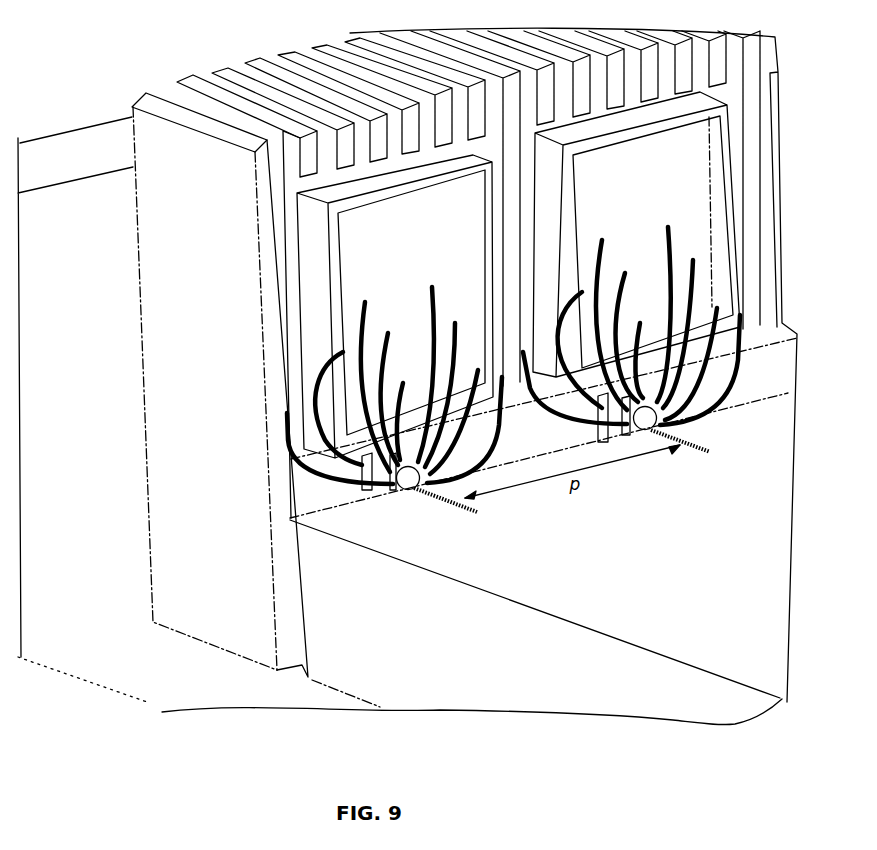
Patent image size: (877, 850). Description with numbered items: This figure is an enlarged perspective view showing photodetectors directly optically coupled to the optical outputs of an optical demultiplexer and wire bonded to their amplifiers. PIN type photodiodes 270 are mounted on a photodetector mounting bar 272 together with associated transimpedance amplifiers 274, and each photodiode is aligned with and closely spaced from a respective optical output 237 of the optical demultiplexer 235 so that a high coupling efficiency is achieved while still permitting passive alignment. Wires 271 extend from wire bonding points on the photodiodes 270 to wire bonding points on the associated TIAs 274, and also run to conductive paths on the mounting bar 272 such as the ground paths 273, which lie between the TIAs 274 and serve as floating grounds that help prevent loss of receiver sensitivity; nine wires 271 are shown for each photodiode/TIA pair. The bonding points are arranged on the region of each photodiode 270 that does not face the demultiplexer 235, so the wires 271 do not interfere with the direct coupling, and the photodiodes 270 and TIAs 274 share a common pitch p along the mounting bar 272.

The optical demultiplexer 235 is at (312, 585).
The optical outputs 237 is at (410, 485).
The PIN type photodiodes 270 is at (383, 490).
The wires 271 is at (290, 450).
The photodetector mounting bar 272 is at (175, 244).
The ground paths 273 is at (278, 185).
The transimpedance amplifiers (TIAs) 274 is at (332, 293).